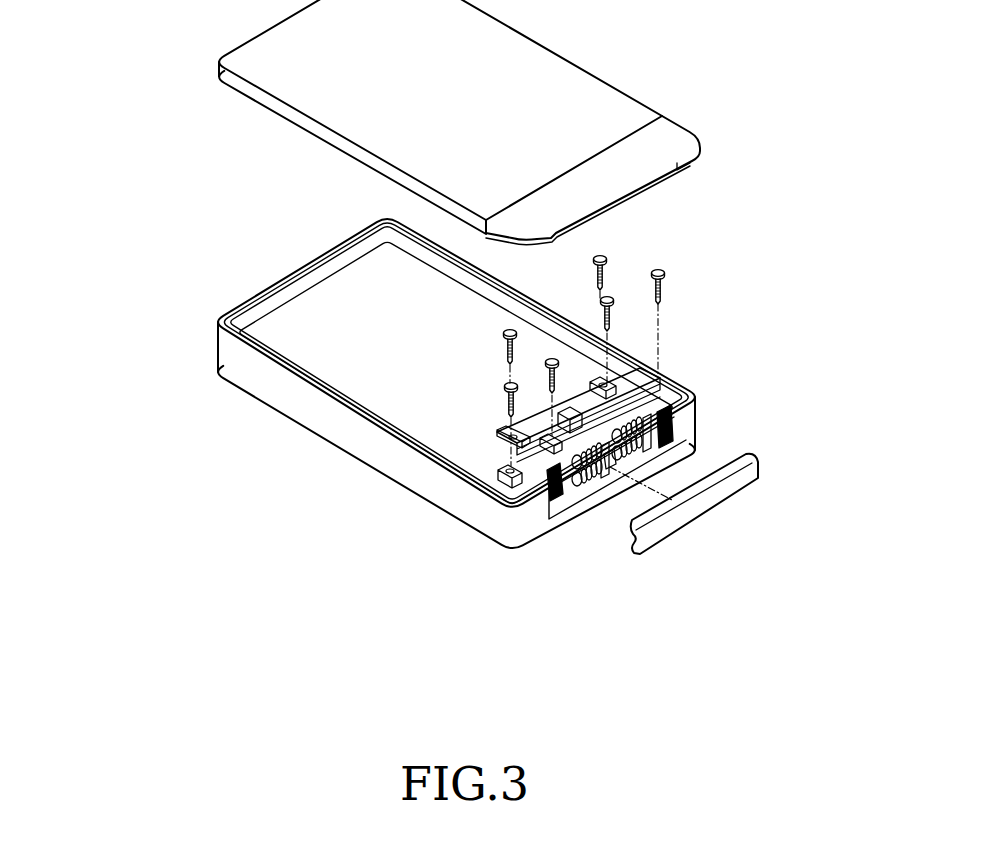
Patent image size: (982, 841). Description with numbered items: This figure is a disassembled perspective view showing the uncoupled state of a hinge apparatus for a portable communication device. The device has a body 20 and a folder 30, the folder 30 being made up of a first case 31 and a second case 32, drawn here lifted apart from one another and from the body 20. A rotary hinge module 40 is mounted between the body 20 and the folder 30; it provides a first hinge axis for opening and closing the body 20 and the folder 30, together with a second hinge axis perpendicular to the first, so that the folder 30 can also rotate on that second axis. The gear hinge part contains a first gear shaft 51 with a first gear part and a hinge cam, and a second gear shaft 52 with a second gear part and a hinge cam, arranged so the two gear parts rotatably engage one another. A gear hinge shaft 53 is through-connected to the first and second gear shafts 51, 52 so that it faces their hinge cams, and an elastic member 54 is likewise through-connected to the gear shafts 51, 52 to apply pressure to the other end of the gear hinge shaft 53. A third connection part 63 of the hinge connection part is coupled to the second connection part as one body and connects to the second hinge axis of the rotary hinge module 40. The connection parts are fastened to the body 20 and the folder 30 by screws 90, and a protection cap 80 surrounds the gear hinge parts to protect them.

The body 20 is at (220, 352).
The folder 30 is at (88, 168).
The first case 31 is at (250, 298).
The second case 32 is at (243, 92).
The rotary hinge module 40 is at (570, 392).
The first gear shaft 51 is at (700, 423).
The second gear shaft 52 is at (697, 396).
The gear hinge shaft 53 is at (700, 437).
The elastic member 54 is at (700, 441).
The third connection part 63 is at (512, 497).
The protection cap 80 is at (693, 518).
The screws 90 is at (660, 272).